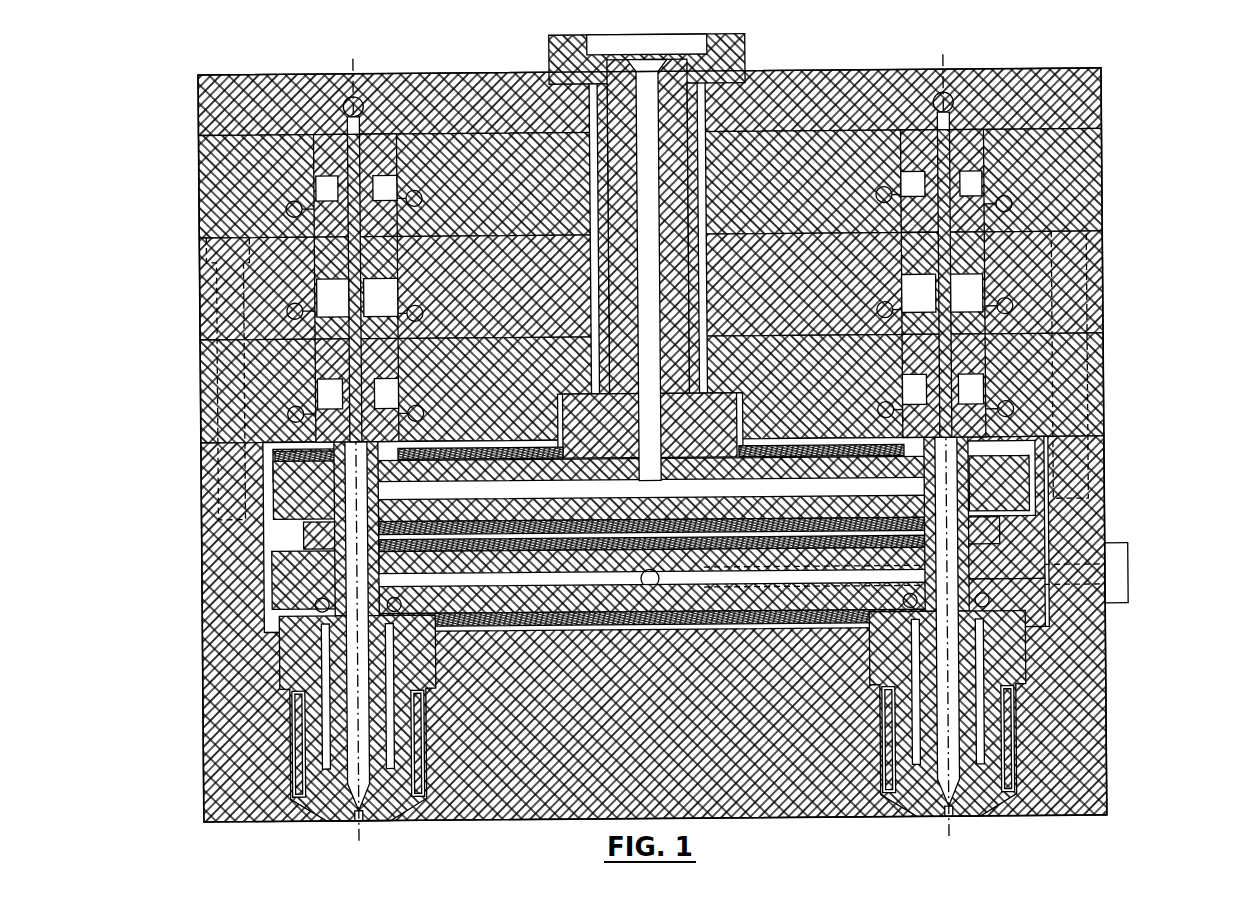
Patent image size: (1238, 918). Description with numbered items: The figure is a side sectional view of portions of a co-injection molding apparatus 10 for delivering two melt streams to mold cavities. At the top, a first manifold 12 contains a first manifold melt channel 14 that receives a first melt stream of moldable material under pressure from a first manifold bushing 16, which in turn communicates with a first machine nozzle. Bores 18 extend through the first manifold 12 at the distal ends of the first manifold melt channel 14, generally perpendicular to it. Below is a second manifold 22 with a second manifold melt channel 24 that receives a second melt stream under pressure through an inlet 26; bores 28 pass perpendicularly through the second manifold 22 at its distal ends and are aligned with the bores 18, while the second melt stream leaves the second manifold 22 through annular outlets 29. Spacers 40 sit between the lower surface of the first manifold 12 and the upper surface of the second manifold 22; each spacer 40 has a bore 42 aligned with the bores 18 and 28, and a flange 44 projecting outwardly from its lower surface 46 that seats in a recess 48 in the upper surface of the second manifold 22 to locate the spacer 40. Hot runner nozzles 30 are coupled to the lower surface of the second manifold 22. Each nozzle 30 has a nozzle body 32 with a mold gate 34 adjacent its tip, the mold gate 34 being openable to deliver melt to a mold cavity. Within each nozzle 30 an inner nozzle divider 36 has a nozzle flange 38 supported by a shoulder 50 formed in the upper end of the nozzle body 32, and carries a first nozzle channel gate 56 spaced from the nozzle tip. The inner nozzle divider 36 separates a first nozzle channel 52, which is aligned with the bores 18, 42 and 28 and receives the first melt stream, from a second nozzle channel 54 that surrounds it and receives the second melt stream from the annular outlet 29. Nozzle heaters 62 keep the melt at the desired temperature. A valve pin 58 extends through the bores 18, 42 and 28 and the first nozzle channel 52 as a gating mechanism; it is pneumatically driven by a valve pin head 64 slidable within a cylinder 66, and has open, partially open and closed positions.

The co-injection molding apparatus 10 is at (1132, 229).
The first manifold 12 is at (1007, 474).
The first manifold melt channel 14 is at (859, 490).
The first manifold bushing 16 is at (674, 209).
The bores 18 is at (280, 463).
The second manifold 22 is at (331, 599).
The second manifold melt channel 24 is at (511, 602).
The inlet 26 is at (646, 592).
The bores 28 is at (336, 621).
The outlets 29 is at (786, 617).
The hot runner nozzles 30 is at (1005, 696).
The nozzle body 32 is at (1015, 724).
The mold gate 34 is at (954, 806).
The inner nozzle divider 36 is at (995, 776).
The nozzle flange 38 is at (996, 611).
The spacers 40 is at (1057, 517).
The bore 42 is at (1066, 562).
The flange 44 is at (326, 566).
The lower surface 46 is at (326, 541).
The recess 48 is at (1076, 587).
The shoulder 50 is at (1036, 644).
The first nozzle channel 52 is at (335, 716).
The second nozzle channel 54 is at (315, 761).
The first nozzle channel gate 56 is at (304, 801).
The valve pin 58 is at (300, 663).
The nozzle heaters 62 is at (874, 795).
The valve pin head 64 is at (324, 263).
The cylinder 66 is at (323, 291).